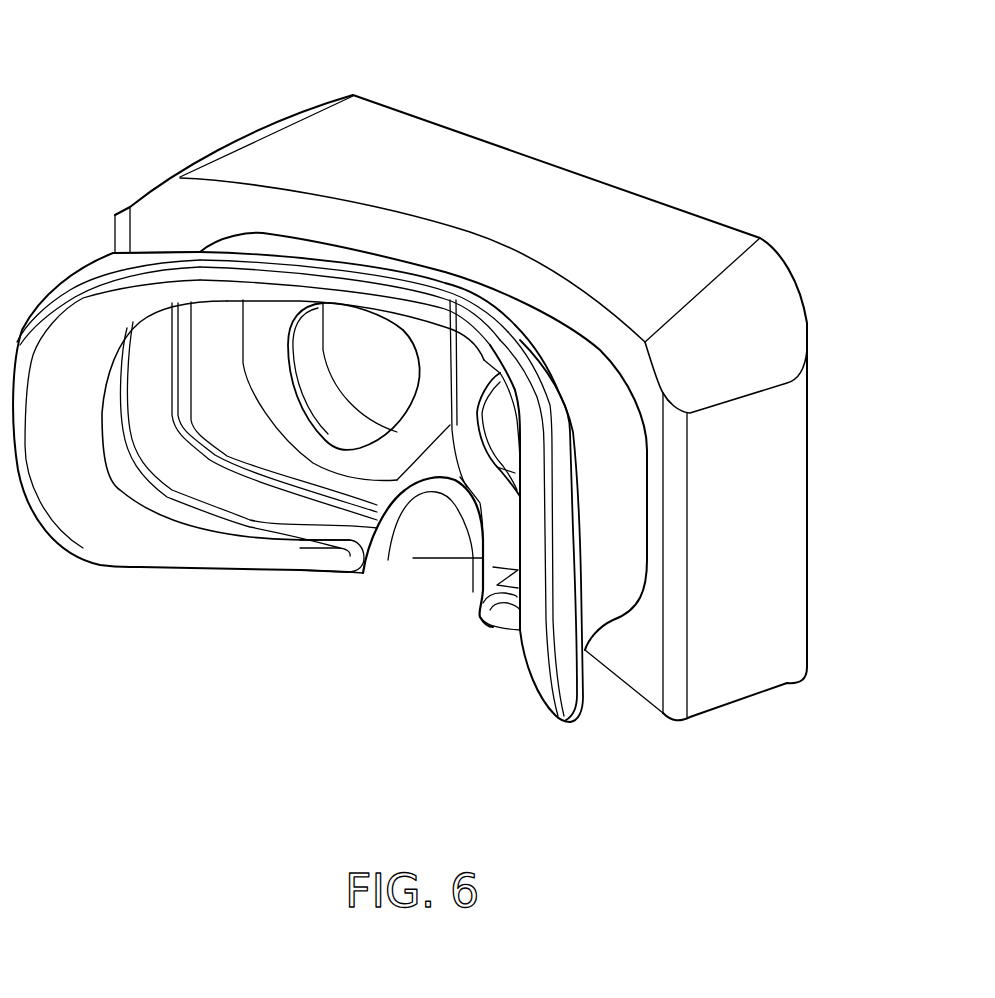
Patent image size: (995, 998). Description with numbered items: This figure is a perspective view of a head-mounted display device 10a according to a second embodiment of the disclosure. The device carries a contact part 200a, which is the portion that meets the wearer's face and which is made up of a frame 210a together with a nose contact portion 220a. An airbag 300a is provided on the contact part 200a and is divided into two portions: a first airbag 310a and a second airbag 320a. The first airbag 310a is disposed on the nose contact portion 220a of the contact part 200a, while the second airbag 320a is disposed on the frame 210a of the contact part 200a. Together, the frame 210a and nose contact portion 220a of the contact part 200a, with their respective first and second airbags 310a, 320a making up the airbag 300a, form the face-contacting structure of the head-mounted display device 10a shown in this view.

The head-mounted display device 10a is at (137, 38).
The contact part 200a is at (268, 470).
The frame 210a is at (246, 508).
The nose contact portion 220a is at (383, 498).
The airbag 300a is at (298, 524).
The first airbag 310a is at (397, 578).
The second airbag 320a is at (161, 550).